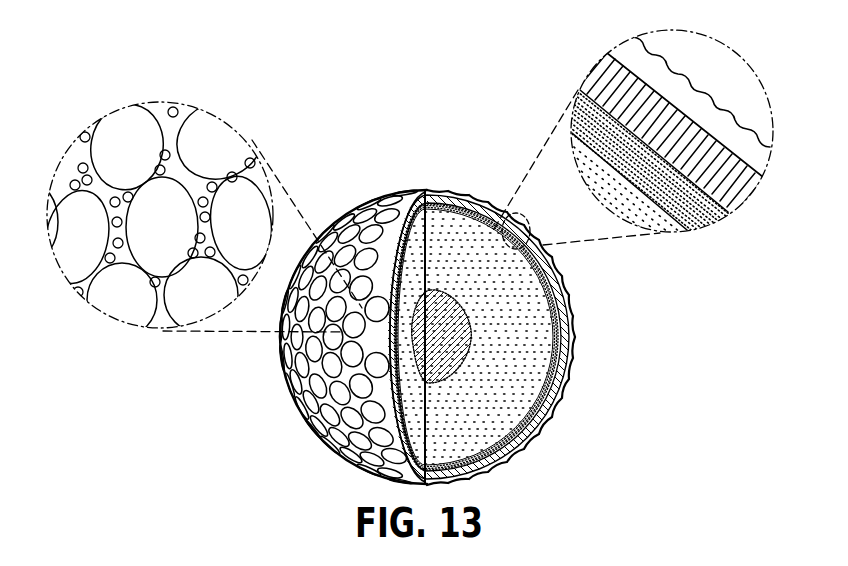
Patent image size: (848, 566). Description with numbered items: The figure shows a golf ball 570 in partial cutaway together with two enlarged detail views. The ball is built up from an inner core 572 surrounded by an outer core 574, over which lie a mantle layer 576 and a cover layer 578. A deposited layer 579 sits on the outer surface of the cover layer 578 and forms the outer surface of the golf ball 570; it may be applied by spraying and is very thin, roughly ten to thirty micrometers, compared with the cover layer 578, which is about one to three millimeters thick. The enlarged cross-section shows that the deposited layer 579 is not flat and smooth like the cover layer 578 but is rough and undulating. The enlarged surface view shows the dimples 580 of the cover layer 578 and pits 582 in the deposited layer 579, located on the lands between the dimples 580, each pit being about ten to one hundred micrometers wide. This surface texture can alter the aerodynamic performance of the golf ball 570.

The golf ball 570 is at (350, 157).
The inner core 572 is at (450, 305).
The outer core 574 is at (533, 303).
The mantle layer 576 is at (563, 322).
The cover layer 578 is at (562, 370).
The deposited layer 579 is at (530, 432).
The dimples 580 is at (70, 168).
The pits 582 is at (110, 262).